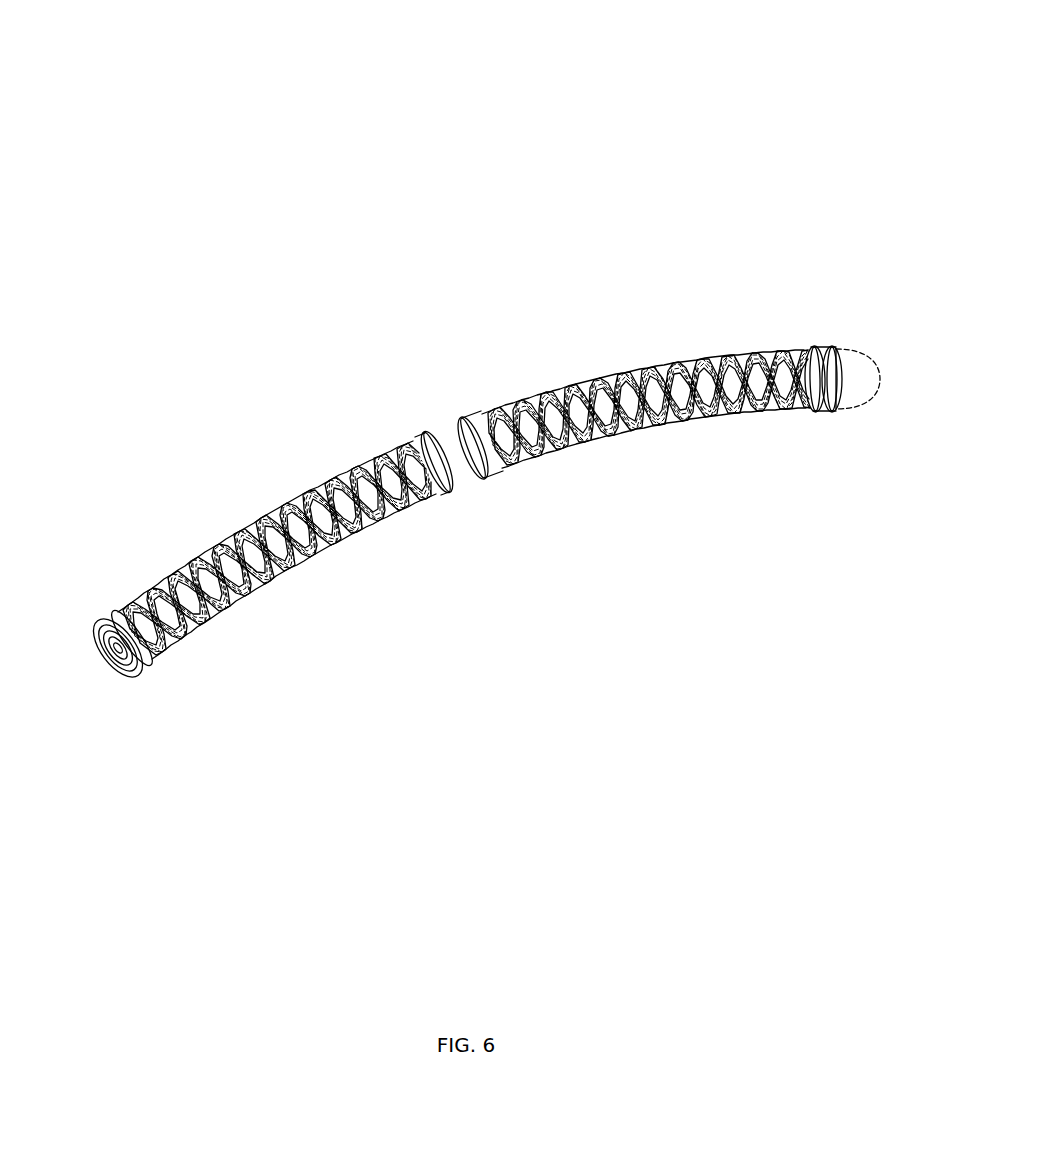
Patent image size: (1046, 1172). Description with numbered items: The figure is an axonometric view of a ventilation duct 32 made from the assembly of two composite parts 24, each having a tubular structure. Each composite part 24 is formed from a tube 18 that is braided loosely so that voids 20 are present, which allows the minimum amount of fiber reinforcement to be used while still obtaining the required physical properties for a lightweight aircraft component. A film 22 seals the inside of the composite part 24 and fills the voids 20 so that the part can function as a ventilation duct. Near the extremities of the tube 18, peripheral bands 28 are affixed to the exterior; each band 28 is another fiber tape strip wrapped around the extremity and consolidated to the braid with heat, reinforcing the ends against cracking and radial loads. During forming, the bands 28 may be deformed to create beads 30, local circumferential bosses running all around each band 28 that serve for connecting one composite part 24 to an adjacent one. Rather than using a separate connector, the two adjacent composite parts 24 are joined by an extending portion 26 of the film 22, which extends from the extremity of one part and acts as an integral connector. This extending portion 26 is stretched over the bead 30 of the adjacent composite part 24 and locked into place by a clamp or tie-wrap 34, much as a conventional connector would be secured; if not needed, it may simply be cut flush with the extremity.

The tube 18 is at (130, 600).
The voids 20 is at (257, 515).
The film 22 is at (92, 655).
The composite part 24 is at (221, 484).
The extending portion 26 is at (450, 487).
The peripheral band 28 is at (832, 367).
The bead 30 is at (127, 687).
The ventilation duct 32 is at (457, 172).
The tie-wrap 34 is at (487, 480).